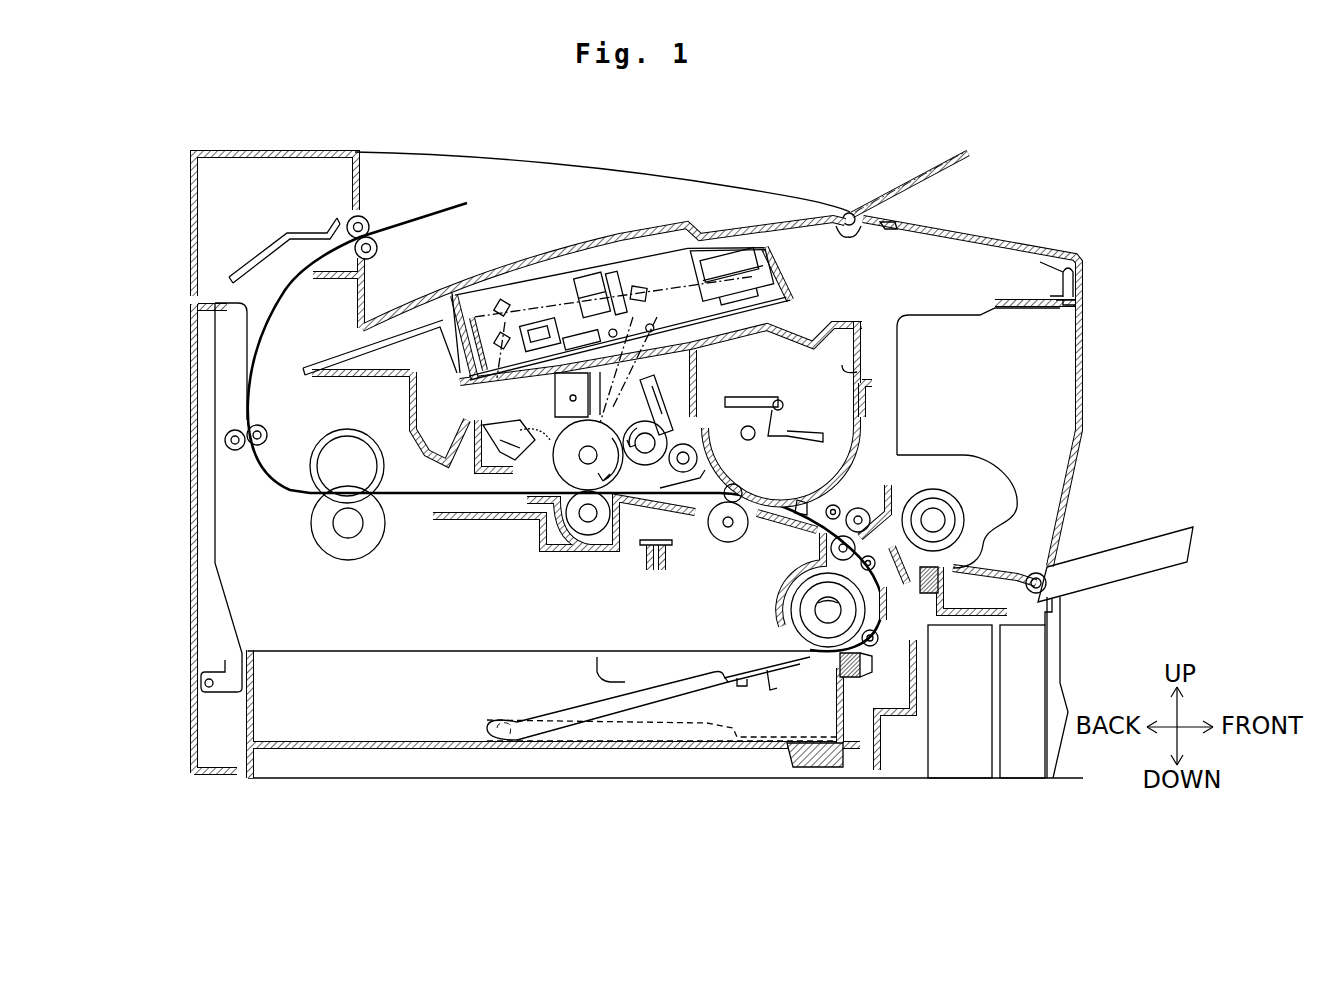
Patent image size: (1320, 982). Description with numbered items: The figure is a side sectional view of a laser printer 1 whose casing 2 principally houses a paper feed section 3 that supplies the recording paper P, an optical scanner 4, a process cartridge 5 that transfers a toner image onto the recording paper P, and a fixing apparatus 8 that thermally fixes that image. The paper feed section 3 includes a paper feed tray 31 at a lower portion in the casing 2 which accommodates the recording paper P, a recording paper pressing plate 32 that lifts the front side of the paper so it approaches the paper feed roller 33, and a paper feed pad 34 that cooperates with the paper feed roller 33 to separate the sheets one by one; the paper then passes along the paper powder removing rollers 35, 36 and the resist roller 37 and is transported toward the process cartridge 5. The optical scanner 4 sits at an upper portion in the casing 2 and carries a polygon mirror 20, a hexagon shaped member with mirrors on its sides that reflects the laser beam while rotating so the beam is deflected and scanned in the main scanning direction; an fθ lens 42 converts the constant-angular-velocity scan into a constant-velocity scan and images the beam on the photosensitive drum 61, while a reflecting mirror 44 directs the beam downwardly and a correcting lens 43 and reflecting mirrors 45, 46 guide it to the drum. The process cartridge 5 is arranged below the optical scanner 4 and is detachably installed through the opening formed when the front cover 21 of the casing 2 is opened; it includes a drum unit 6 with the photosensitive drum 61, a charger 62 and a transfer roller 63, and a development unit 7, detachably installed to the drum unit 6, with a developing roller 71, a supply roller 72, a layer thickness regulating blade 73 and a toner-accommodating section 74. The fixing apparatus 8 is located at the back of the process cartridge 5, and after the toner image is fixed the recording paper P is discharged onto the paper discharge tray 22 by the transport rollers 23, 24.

The laser printer 1 is at (1050, 176).
The casing 2 is at (1000, 243).
The paper feed section 3 is at (305, 631).
The optical scanner 4 is at (610, 297).
The process cartridge 5 is at (832, 304).
The drum unit 6 is at (470, 463).
The development unit 7 is at (882, 309).
The fixing apparatus 8 is at (304, 518).
The polygon mirror 20 is at (732, 271).
The front cover 21 is at (1085, 378).
The paper discharge tray 22 is at (505, 258).
The transport roller 23 is at (248, 455).
The transport roller 24 is at (370, 222).
The paper feed tray 31 is at (247, 712).
The recording paper pressing plate 32 is at (597, 702).
The paper feed roller 33 is at (790, 606).
The paper feed pad 34 is at (840, 665).
The paper powder removing roller 35 is at (888, 646).
The paper powder removing roller 36 is at (936, 495).
The resist roller 37 is at (725, 535).
The fθ lens 42 is at (592, 295).
The correcting lens 43 is at (540, 335).
The reflecting mirror 44 is at (502, 324).
The reflecting mirror 45 is at (526, 333).
The reflecting mirror 46 is at (616, 293).
The photosensitive drum 61 is at (545, 470).
The charger 62 is at (576, 452).
The transfer roller 63 is at (590, 535).
The developing roller 71 is at (612, 395).
The supply roller 72 is at (690, 446).
The layer thickness regulating blade 73 is at (666, 420).
The toner-accommodating section 74 is at (856, 368).
The recording paper P is at (445, 205).